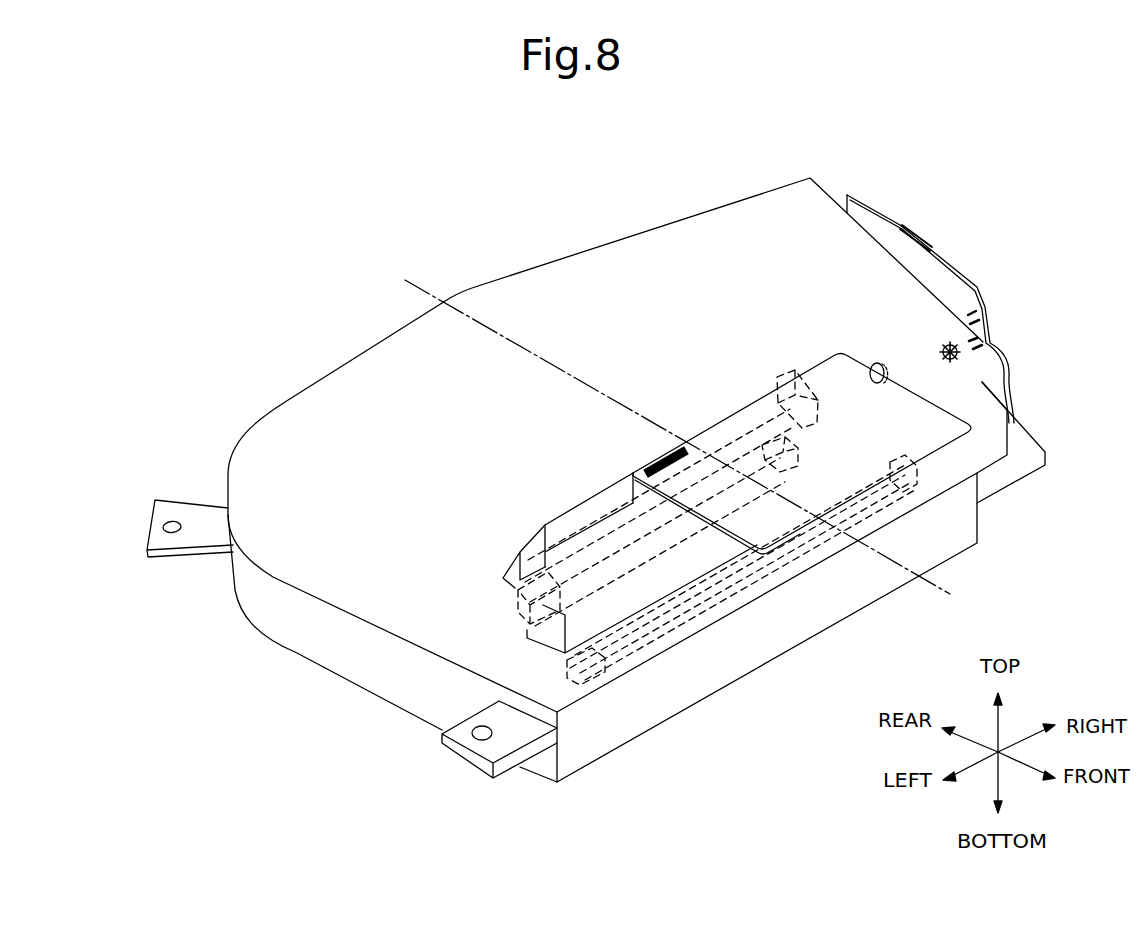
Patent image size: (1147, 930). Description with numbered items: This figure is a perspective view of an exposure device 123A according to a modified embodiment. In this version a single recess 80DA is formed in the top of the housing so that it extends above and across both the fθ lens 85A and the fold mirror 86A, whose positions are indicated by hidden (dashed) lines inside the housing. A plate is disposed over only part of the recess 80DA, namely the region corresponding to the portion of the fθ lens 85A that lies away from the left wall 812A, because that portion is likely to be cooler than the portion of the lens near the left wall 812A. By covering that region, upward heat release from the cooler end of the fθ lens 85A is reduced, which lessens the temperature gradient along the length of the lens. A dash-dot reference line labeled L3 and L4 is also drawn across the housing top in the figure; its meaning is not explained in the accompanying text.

The exposure device 123A is at (843, 151).
The left wall 812A is at (318, 652).
The fθ lens 85A is at (545, 618).
The fold mirror 86A is at (612, 675).
The recess 80DA is at (630, 603).
The line L3 is at (592, 389).
The line L4 is at (897, 561).